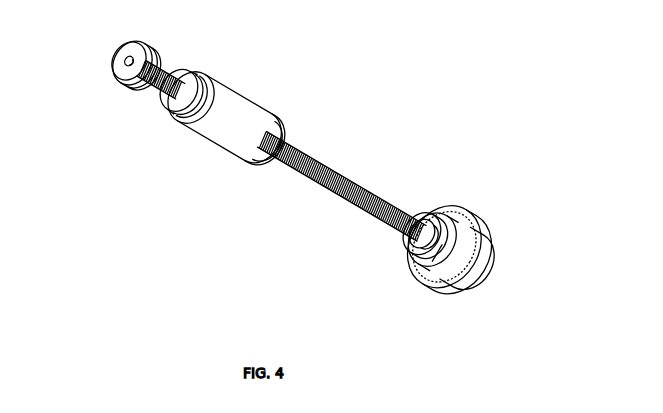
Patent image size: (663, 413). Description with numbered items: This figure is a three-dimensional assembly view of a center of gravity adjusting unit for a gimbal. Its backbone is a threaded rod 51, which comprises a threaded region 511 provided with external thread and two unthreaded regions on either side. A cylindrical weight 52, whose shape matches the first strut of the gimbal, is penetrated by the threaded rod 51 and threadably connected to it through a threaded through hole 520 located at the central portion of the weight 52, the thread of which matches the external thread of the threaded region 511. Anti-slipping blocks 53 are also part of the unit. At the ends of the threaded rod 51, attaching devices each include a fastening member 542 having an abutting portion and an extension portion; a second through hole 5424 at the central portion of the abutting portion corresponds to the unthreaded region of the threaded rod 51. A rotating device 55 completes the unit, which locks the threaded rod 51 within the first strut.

The threaded rod 51 is at (308, 190).
The threaded region 511 is at (316, 183).
The weight 52 is at (252, 120).
The anti-slipping block 53 is at (235, 90).
The threaded through hole 520 is at (206, 132).
The fastening member 542 is at (113, 83).
The second through hole 5424 is at (122, 60).
The rotating device 55 is at (487, 248).